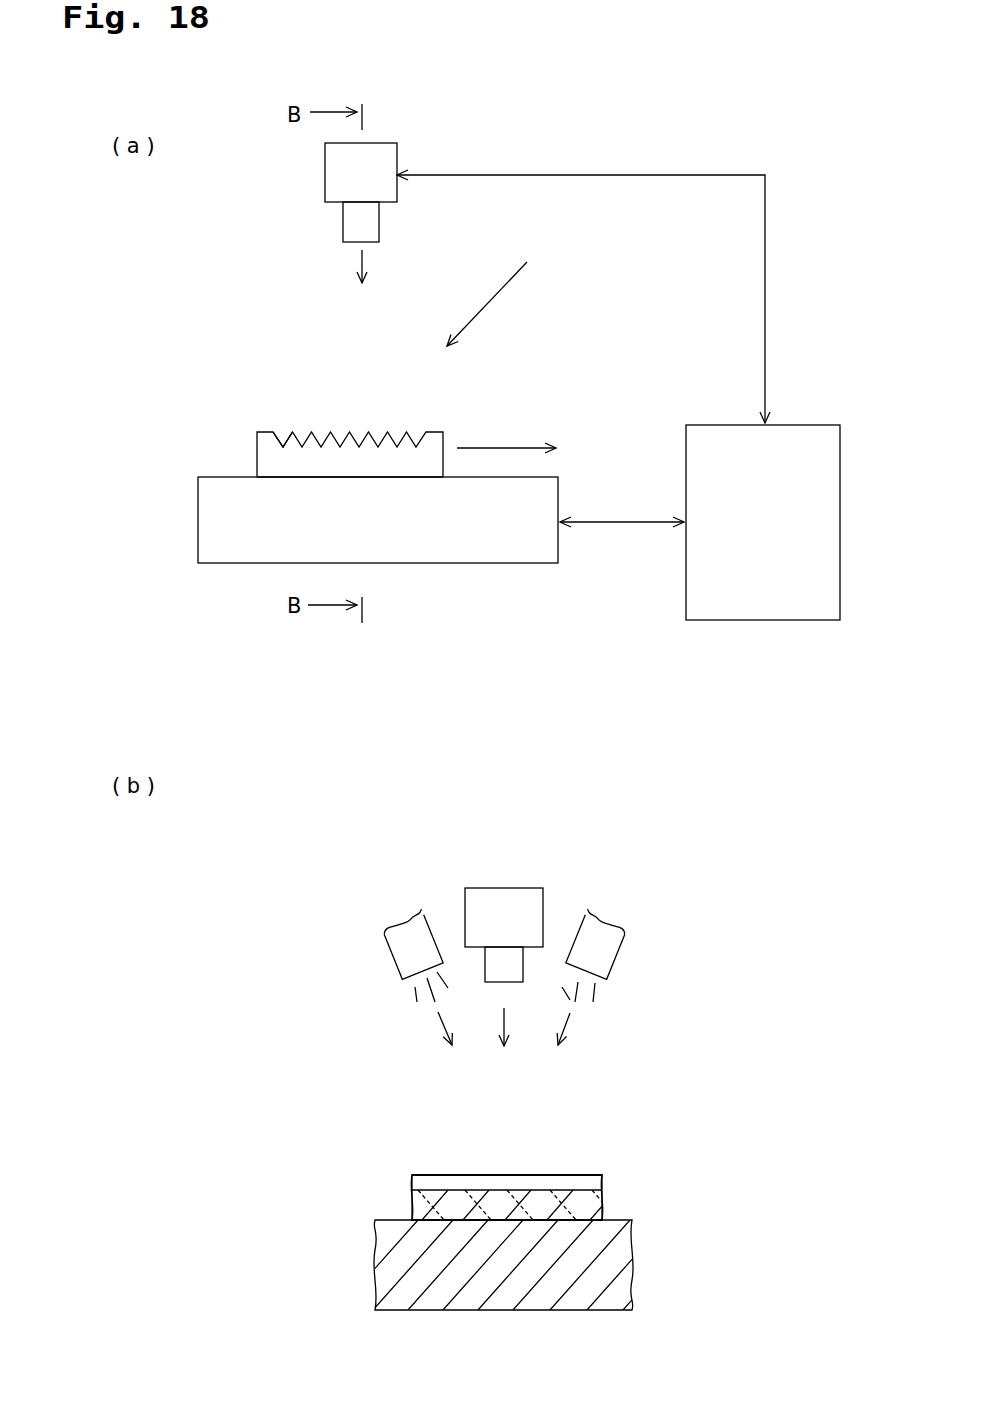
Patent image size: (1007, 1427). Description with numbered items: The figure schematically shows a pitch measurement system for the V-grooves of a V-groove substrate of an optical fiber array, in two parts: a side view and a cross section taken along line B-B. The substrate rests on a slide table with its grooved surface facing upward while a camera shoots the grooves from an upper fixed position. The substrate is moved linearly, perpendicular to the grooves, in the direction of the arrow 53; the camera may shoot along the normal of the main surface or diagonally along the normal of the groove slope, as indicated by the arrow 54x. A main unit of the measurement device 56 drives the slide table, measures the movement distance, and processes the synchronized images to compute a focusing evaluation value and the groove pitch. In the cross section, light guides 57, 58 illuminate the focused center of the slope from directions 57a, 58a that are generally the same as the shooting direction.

The arrow 53 is at (508, 447).
The arrow 54x is at (502, 287).
The main unit of the measurement device 56 is at (805, 424).
The light guide 57 is at (395, 960).
The direction 57a is at (435, 1030).
The light guide 58 is at (625, 950).
The direction 58a is at (580, 1030).